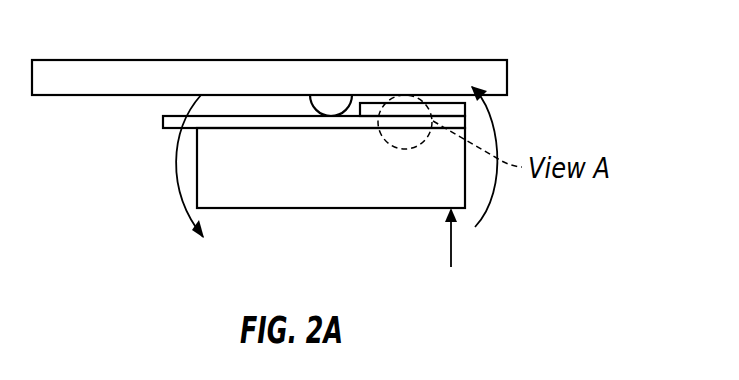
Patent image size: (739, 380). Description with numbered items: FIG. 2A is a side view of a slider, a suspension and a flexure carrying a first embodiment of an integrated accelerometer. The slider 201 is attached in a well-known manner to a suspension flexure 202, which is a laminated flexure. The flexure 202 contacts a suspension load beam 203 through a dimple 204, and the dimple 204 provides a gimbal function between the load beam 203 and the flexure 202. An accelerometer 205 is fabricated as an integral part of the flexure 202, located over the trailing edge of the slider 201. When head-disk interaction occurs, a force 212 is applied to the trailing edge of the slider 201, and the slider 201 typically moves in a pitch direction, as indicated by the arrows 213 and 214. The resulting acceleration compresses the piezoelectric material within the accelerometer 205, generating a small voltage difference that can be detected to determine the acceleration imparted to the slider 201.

The slider 201 is at (258, 210).
The suspension flexure 202 is at (163, 122).
The suspension load beam 203 is at (107, 60).
The dimple 204 is at (331, 103).
The accelerometer 205 is at (467, 108).
The force 212 is at (452, 258).
The arrow 213 is at (175, 167).
The arrow 214 is at (495, 197).